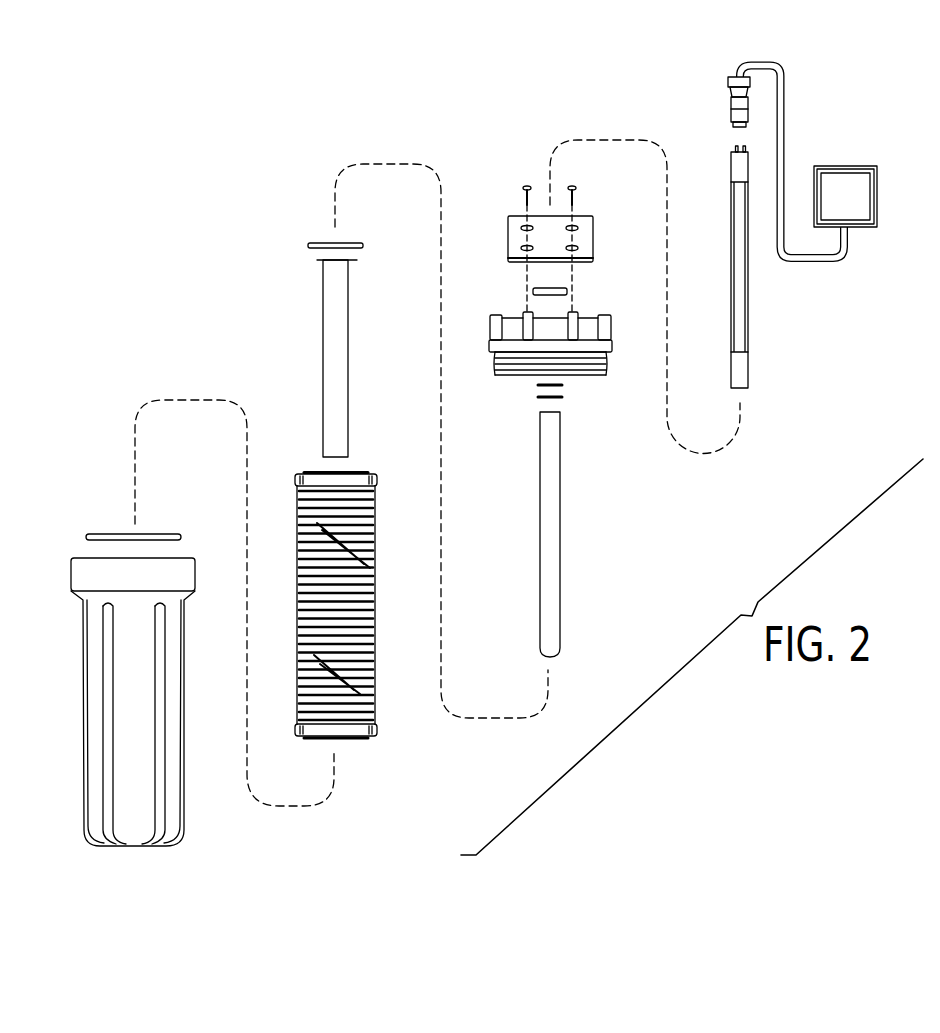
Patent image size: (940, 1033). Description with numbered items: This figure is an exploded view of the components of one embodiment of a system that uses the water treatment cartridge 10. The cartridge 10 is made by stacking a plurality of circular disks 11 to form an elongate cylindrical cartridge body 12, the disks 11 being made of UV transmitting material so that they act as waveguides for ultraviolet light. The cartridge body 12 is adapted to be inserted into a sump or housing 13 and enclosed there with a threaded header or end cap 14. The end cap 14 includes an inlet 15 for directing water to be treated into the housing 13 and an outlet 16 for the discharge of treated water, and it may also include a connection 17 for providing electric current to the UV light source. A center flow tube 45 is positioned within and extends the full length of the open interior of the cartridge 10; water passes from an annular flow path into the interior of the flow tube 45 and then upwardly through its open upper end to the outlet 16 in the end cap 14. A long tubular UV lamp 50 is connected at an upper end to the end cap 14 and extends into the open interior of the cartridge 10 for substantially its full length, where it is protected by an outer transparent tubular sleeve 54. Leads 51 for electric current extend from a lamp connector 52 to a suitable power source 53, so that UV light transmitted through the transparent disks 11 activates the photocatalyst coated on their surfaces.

The water treatment cartridge 10 is at (379, 461).
The circular disks 11 is at (362, 557).
The cartridge body 12 is at (358, 608).
The housing 13 is at (163, 783).
The end cap 14 is at (559, 283).
The inlet 15 is at (482, 319).
The outlet 16 is at (604, 319).
The connection 17 is at (540, 284).
The center flow tube 45 is at (315, 357).
The UV lamp 50 is at (740, 315).
The leads 51 is at (780, 121).
The lamp connector 52 is at (722, 108).
The power source 53 is at (845, 187).
The tubular sleeve 54 is at (552, 529).